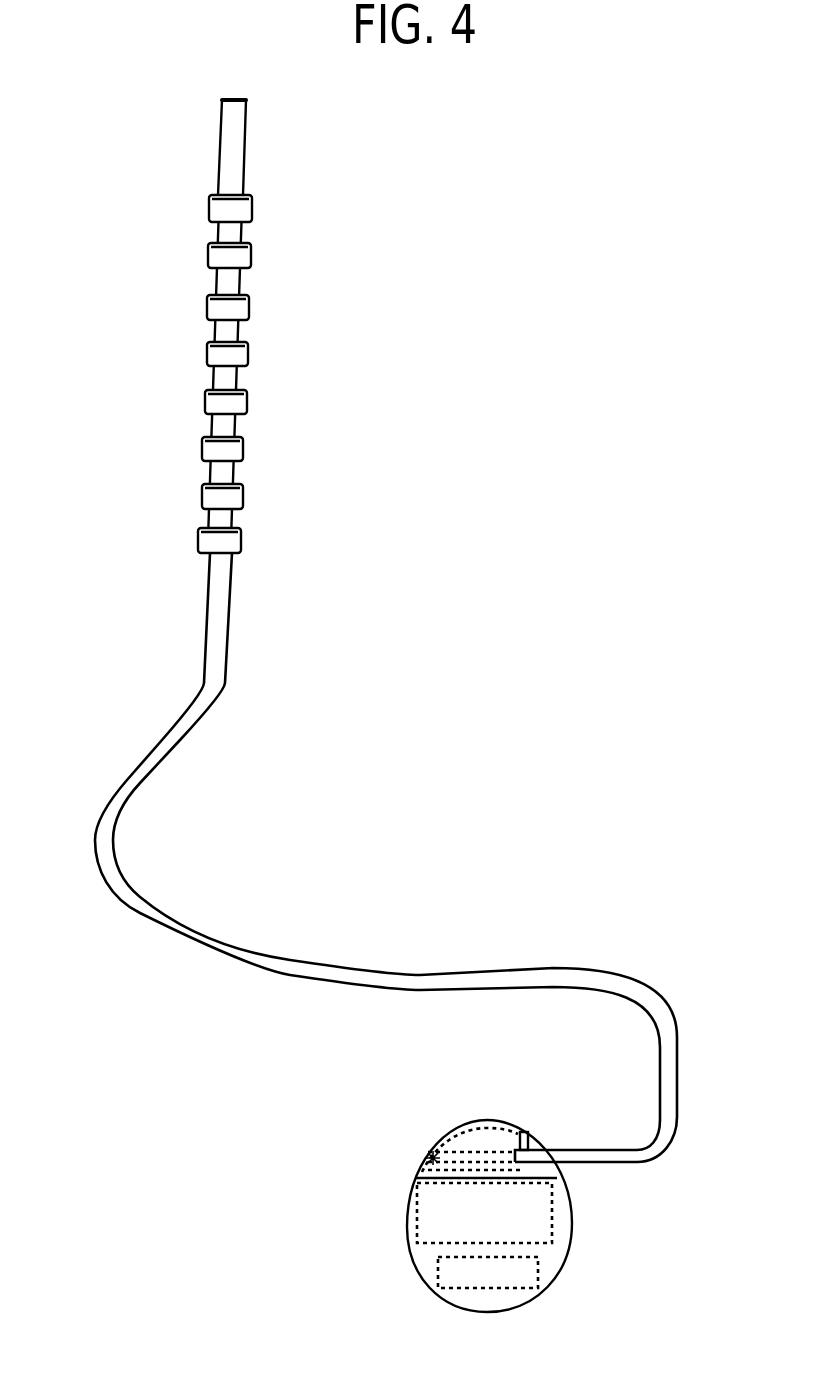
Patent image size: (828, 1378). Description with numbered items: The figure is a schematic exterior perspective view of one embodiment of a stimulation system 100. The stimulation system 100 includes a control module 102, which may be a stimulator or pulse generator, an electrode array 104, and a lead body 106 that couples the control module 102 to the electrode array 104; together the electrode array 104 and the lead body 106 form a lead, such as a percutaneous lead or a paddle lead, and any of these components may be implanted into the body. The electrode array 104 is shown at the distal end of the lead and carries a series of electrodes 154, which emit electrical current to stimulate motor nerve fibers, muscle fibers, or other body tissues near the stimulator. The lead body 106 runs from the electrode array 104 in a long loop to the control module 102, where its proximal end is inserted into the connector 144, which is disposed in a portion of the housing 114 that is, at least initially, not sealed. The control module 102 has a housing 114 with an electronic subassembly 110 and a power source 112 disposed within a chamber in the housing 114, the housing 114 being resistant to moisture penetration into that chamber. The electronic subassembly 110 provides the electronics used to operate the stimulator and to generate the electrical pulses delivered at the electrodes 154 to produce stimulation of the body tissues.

The stimulation system 100 is at (565, 386).
The control module 102 is at (473, 1188).
The electrode array 104 is at (253, 326).
The lead body 106 is at (231, 597).
The electronic subassembly 110 is at (485, 1217).
The power source 112 is at (488, 1273).
The housing 114 is at (497, 1120).
The connector 144 is at (427, 1153).
The electrodes 154 is at (207, 353).